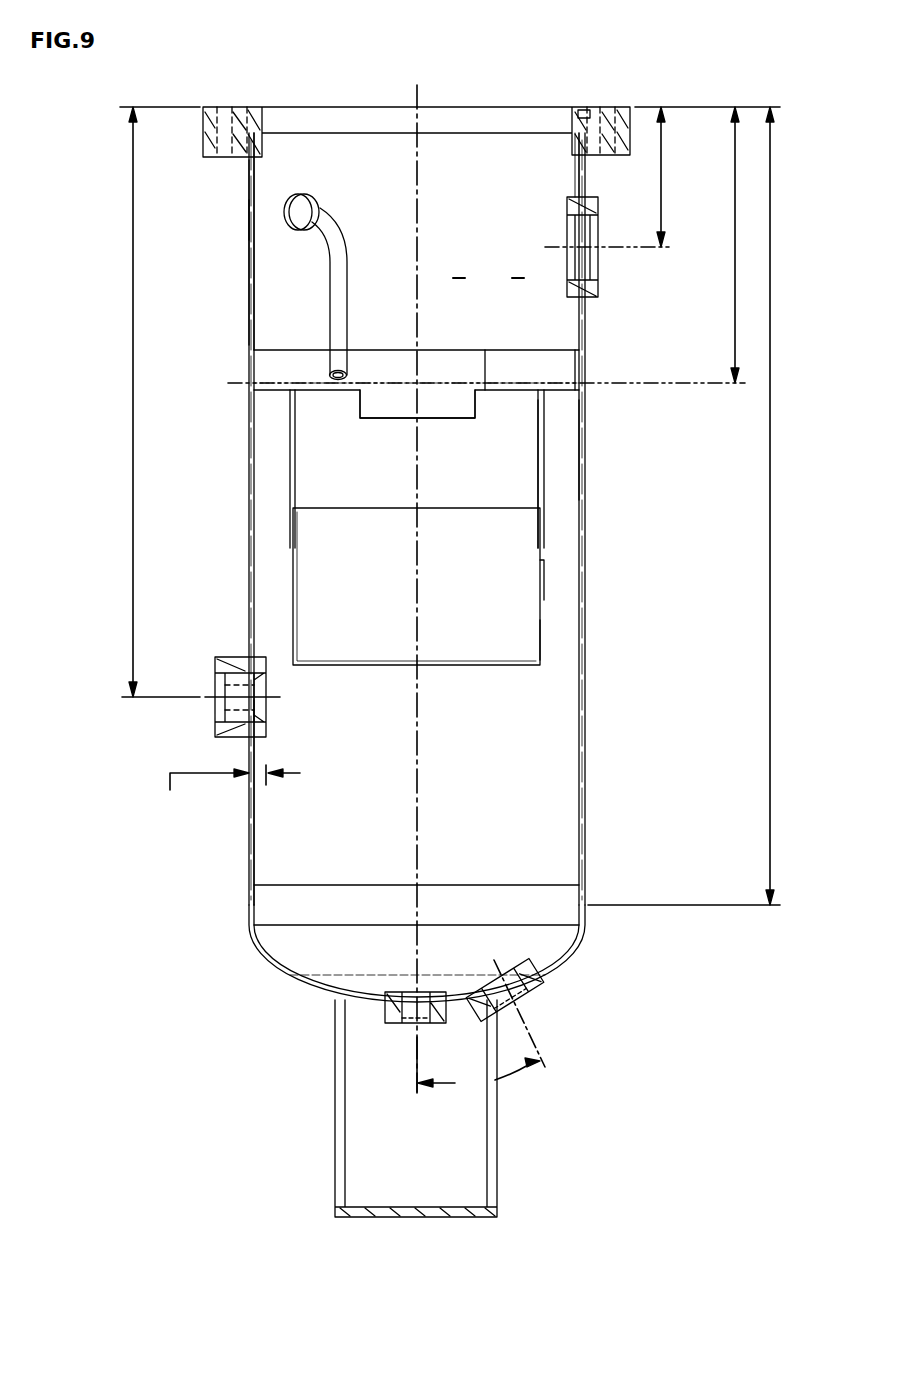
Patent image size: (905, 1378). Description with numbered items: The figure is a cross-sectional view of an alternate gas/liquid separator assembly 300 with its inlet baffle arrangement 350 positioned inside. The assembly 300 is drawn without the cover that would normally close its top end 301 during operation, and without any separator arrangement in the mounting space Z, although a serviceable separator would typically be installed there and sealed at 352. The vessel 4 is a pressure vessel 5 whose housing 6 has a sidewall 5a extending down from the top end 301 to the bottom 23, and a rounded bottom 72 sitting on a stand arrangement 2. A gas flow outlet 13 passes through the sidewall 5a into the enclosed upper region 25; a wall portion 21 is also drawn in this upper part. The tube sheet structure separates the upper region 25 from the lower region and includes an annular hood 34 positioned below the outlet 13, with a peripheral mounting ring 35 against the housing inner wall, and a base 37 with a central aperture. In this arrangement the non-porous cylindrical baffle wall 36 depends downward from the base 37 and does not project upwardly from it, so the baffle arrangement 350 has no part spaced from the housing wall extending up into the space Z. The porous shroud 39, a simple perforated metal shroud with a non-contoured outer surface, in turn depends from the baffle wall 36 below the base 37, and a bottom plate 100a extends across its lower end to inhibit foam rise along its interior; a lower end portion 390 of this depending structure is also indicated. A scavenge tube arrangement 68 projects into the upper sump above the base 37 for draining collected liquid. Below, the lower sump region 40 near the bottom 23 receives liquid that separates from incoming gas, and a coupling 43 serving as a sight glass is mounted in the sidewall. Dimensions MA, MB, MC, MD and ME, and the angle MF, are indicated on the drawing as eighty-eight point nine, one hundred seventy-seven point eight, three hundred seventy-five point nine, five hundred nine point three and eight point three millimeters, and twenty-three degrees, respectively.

The top end 301 is at (590, 110).
The enclosed upper region 25 is at (252, 222).
The gas flow outlet 13 is at (567, 208).
The scavenge tube arrangement 68 is at (348, 290).
The mounting space Z is at (488, 278).
The vessel wall upper portion 21 is at (256, 292).
The base 37 is at (488, 378).
The annular hood 34 is at (570, 372).
The peripheral mounting ring 35 is at (580, 366).
The central baffle wall 36 is at (545, 420).
The seal location 352 is at (385, 412).
The inlet baffle arrangement 350 is at (545, 450).
The pressure vessel sidewall 5a is at (585, 488).
The separator assembly 300 is at (625, 540).
The porous shroud 39 is at (545, 585).
The pressure vessel 5 is at (582, 630).
The bottom plate 100a is at (315, 666).
The vessel 4 is at (585, 672).
The inner cylinder lower end 390 is at (545, 628).
The coupling 43 is at (225, 735).
The housing 6 is at (585, 792).
The lower sump region 40 is at (290, 960).
The bottom 23 is at (310, 985).
The rounded bottom 72 is at (380, 1002).
The stand arrangement 2 is at (492, 1122).
The dimension MA is at (612, 177).
The dimension MB is at (707, 245).
The dimension MC is at (199, 402).
The dimension MD is at (689, 506).
The dimension ME is at (226, 791).
The angle MF is at (478, 1066).